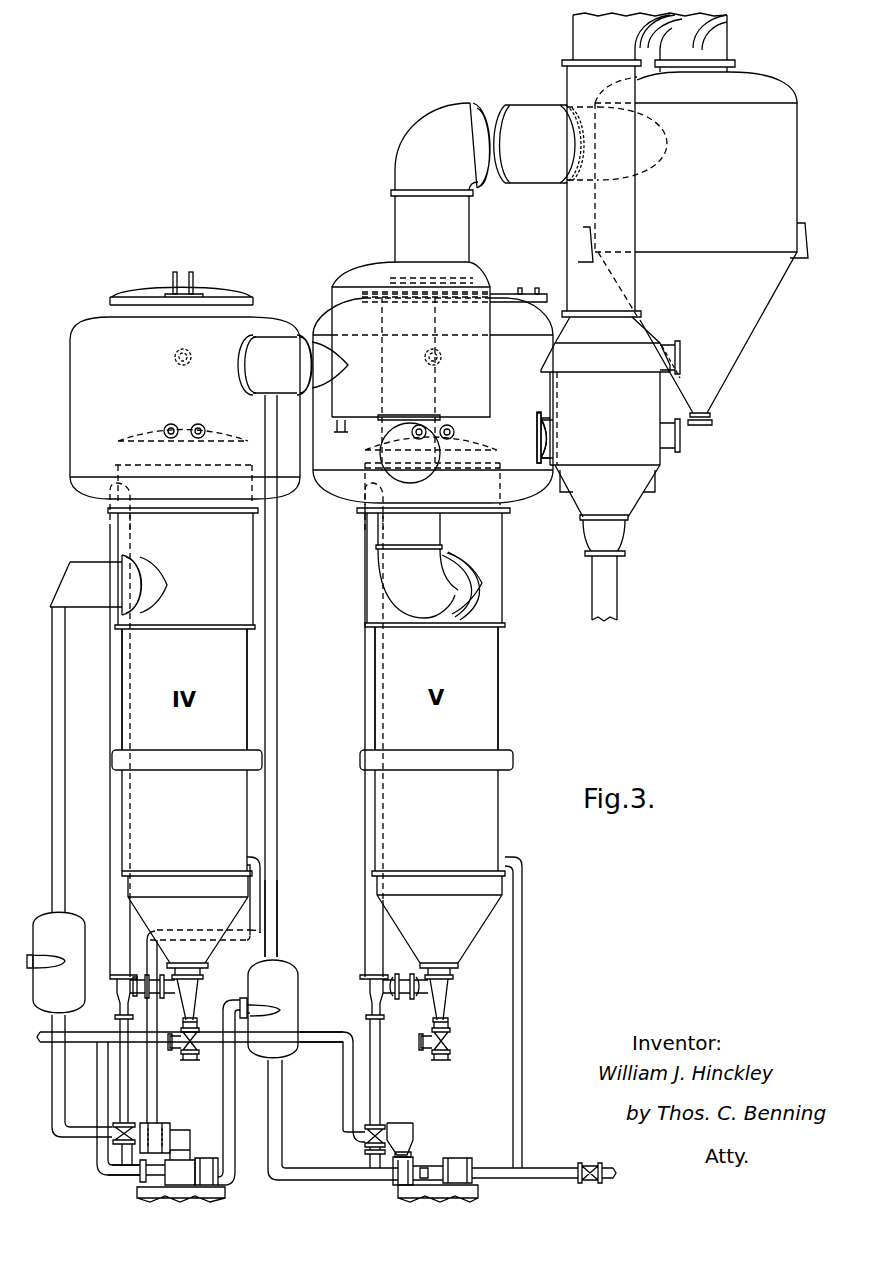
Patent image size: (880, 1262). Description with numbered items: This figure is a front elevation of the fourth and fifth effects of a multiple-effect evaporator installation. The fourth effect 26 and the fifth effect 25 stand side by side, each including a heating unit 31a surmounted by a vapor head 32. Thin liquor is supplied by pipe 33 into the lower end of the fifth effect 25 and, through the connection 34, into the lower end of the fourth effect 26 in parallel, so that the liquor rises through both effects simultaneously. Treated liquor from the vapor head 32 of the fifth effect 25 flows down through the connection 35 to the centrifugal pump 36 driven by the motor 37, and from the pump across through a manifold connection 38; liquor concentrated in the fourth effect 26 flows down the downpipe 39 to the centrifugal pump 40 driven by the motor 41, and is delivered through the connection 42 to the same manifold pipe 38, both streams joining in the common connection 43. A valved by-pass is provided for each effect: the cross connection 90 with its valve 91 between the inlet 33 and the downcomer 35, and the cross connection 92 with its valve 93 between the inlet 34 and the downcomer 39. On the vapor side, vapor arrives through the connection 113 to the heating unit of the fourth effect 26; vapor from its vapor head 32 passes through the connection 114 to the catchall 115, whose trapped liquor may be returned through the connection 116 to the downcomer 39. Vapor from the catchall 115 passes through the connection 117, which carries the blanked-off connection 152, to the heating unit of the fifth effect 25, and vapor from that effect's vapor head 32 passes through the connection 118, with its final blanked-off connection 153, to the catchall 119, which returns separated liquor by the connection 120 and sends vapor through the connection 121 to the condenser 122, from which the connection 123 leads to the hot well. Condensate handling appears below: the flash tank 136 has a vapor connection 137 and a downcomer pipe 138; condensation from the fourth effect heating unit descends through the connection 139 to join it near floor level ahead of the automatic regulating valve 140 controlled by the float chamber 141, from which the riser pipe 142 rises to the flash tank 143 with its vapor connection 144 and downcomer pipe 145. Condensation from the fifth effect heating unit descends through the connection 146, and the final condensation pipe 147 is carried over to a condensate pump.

The vapor head 32 is at (88, 408).
The connection 114 is at (285, 352).
The fourth effect 26 is at (266, 601).
The vapor connection 144 is at (280, 916).
The catchall 115 is at (411, 366).
The connection 116 is at (337, 433).
The blanked-off connection 152 is at (440, 453).
The connection 118 is at (395, 230).
The blanked-off connection 153 is at (526, 120).
The connection 121 is at (567, 223).
The catchall 119 is at (693, 242).
The connection 120 is at (712, 418).
The condenser 122 is at (608, 436).
The connection 123 is at (612, 598).
The downpipe 39 is at (118, 793).
The heating unit 31a is at (392, 686).
The connection 113 is at (88, 562).
The vapor connection 137 is at (66, 884).
The flash tank 136 is at (56, 962).
The downcomer pipe 138 is at (60, 1072).
The common connection 43 is at (72, 1031).
The connection 42 is at (98, 1098).
The centrifugal pump 40 is at (140, 1180).
The valve 93 is at (152, 995).
The cross connection 92 is at (172, 987).
The connection 34 is at (188, 1018).
The connection 139 is at (262, 864).
The float chamber 141 is at (172, 1133).
The regulating valve 140 is at (187, 1133).
The motor 41 is at (207, 1158).
The riser pipe 142 is at (236, 1115).
The flash tank 143 is at (273, 1009).
The downcomer pipe 145 is at (283, 1098).
The manifold connection 38 is at (310, 1032).
The fifth effect 25 is at (511, 609).
The connection 117 is at (425, 535).
The connection 35 is at (368, 942).
The valve 91 is at (404, 974).
The cross connection 90 is at (420, 994).
The pipe 33 is at (450, 1035).
The connection 146 is at (523, 990).
The centrifugal pump 36 is at (414, 1158).
The motor 37 is at (460, 1158).
The final condensation pipe 147 is at (555, 1166).